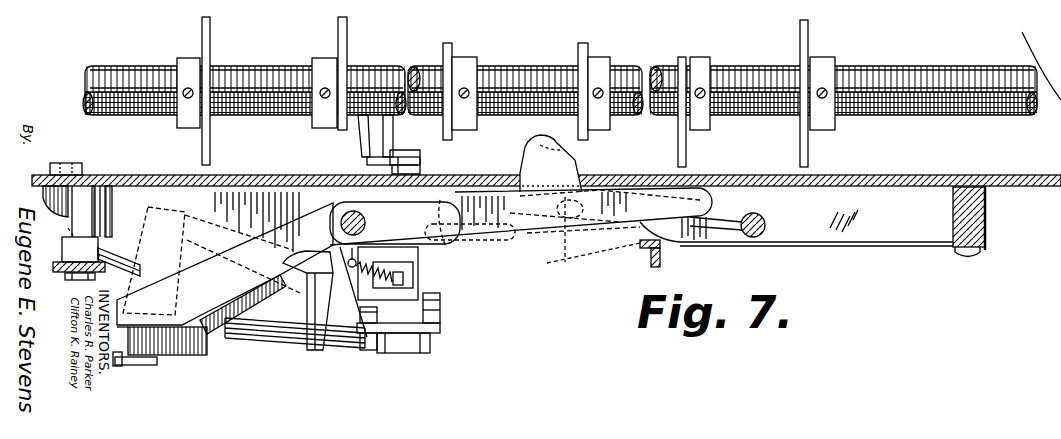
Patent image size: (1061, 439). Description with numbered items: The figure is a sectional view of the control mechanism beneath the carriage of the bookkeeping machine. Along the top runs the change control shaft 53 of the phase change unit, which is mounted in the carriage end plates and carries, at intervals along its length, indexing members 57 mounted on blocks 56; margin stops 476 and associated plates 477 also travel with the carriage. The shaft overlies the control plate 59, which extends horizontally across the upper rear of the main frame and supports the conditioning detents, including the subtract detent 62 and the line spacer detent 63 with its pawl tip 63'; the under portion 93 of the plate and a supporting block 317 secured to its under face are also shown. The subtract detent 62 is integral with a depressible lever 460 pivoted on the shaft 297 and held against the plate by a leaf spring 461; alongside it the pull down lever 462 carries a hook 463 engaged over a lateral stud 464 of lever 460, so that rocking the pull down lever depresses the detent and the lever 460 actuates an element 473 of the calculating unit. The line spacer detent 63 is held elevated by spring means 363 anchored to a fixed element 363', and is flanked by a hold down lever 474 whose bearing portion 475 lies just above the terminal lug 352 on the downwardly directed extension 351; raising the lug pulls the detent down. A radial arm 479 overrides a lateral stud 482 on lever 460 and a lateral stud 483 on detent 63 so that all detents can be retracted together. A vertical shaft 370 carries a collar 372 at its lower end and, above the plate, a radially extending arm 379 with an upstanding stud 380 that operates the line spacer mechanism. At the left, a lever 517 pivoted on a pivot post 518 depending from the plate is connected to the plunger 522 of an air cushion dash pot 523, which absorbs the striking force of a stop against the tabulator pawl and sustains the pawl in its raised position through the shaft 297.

The change control shaft 53 is at (950, 75).
The blocks 56 is at (476, 62).
The indexing members 57 is at (451, 45).
The control plate 59 is at (884, 180).
The subtract detent 62 is at (573, 166).
The line spacer detent 63 is at (560, 228).
The pawl tip 63' is at (577, 155).
The under portion of the control plate 93 is at (985, 225).
The shaft 297 is at (366, 223).
The supporting block 317 is at (915, 200).
The downwardly directed extension 351 is at (117, 366).
The terminal lug 352 is at (140, 365).
The spring means 363 is at (409, 273).
The fixed element 363' is at (446, 283).
The vertical shaft 370 is at (420, 170).
The collar 372 is at (430, 348).
The radially extending arm 379 is at (423, 157).
The upstanding stud 380 is at (372, 137).
The depressible lever 460 is at (582, 222).
The leaf spring 461 is at (738, 244).
The pull down lever 462 is at (167, 277).
The hook 463 is at (504, 205).
The lateral stud 464 is at (460, 240).
The element of the calculating unit 473 is at (661, 262).
The hold down lever 474 is at (207, 342).
The bearing portion 475 is at (172, 357).
The margin stops 476 is at (180, 60).
The guide plate 477 is at (203, 147).
The radial arm 479 is at (720, 218).
The lateral stud 482 is at (565, 250).
The lateral stud 483 is at (575, 250).
The lever 517 is at (103, 245).
The pivot post 518 is at (83, 200).
The plunger 522 is at (126, 262).
The air cushion dash pot 523 is at (295, 335).